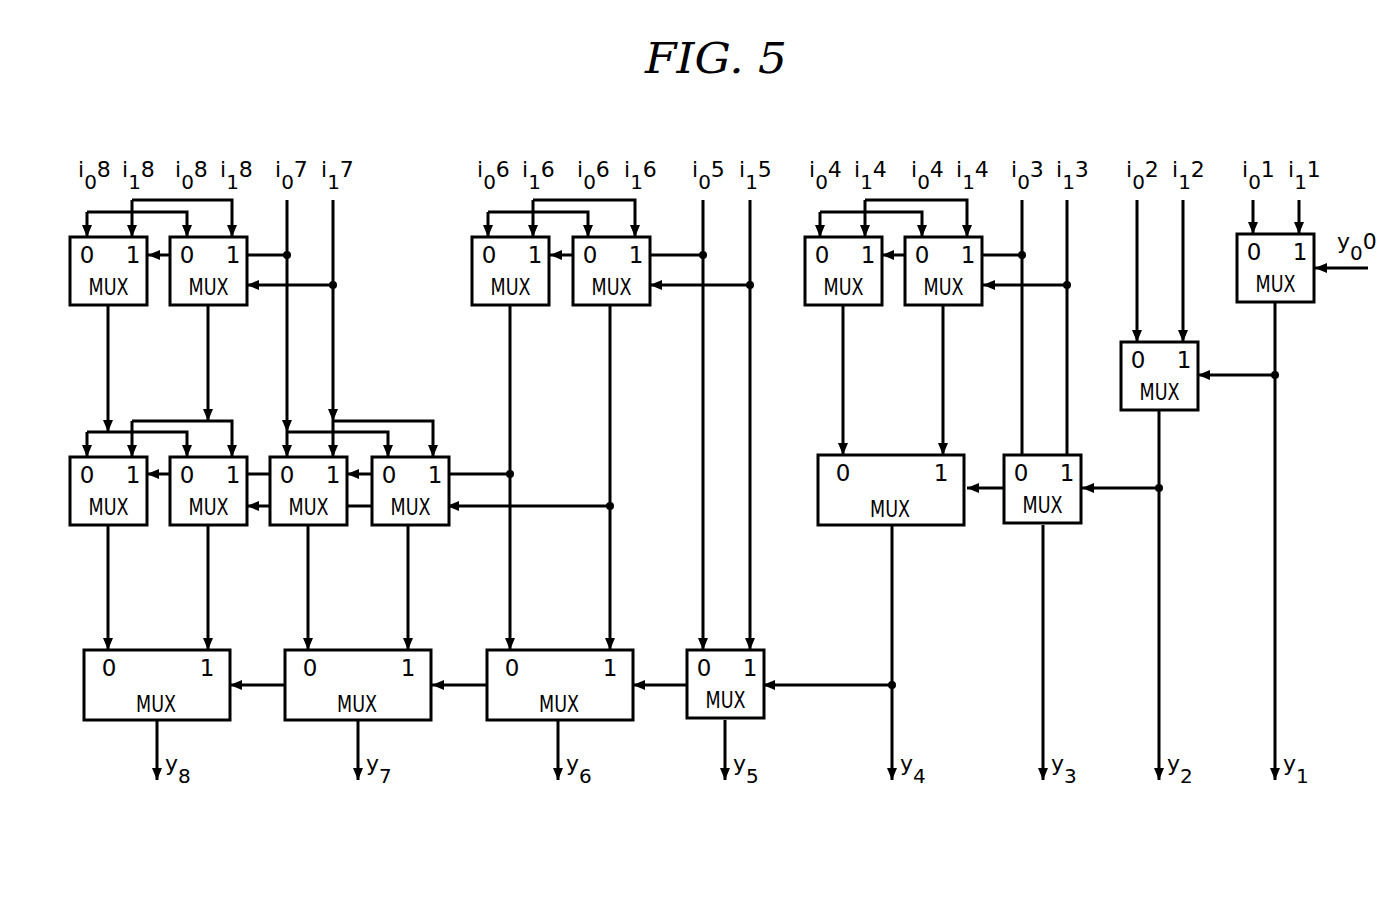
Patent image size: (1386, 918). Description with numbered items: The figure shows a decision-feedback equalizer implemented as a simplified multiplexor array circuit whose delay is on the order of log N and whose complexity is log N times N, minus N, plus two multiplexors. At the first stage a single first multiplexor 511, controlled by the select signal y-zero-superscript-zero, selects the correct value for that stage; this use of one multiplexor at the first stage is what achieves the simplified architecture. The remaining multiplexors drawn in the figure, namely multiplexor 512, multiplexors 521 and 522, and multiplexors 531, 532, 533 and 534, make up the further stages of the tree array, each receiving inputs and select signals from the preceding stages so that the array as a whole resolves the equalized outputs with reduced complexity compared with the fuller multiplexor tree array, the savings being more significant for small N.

The first multiplexor 511 is at (1237, 249).
The multiplexer 512 is at (1198, 352).
The multiplexer 521 is at (1082, 469).
The multiplexer 522 is at (896, 455).
The multiplexer 531 is at (764, 650).
The multiplexer 532 is at (560, 650).
The multiplexer 533 is at (360, 650).
The multiplexer 534 is at (159, 650).